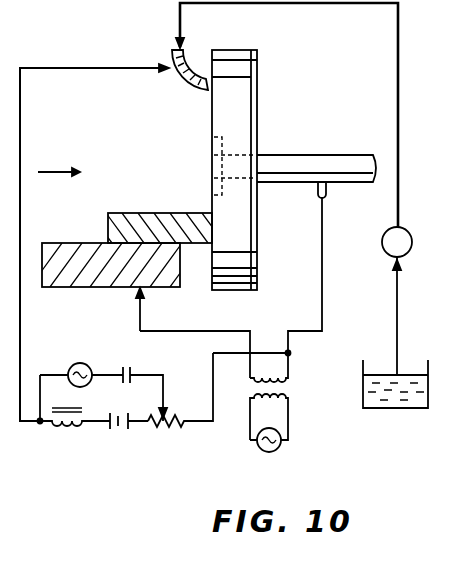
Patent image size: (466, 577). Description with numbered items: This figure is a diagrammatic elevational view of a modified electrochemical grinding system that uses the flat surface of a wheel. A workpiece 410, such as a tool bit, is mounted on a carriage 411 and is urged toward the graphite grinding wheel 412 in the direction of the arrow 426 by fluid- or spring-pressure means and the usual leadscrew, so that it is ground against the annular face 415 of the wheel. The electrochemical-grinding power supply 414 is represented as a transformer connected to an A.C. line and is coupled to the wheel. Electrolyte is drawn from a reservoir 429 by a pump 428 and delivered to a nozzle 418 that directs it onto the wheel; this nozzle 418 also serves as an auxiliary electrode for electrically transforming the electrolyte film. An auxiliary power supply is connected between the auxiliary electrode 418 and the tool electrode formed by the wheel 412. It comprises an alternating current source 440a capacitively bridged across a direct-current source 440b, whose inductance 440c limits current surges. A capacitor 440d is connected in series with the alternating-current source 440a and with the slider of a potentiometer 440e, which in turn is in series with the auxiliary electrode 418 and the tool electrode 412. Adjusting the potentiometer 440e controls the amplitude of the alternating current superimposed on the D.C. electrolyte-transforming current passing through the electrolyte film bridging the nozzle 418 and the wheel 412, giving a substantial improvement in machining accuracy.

The workpiece 410 is at (150, 214).
The carriage 411 is at (85, 243).
The wheel 412 is at (257, 52).
The electrochemical-grinding power supply 414 is at (316, 383).
The annular face 415 is at (208, 276).
The nozzle 418 is at (172, 60).
The arrow 426 is at (52, 170).
The pump 428 is at (388, 238).
The reservoir 429 is at (362, 398).
The alternating current source 440a is at (72, 363).
The direct-current source 440b is at (128, 430).
The inductance 440c is at (60, 430).
The capacitor 440d is at (131, 370).
The potentiometer 440e is at (183, 425).